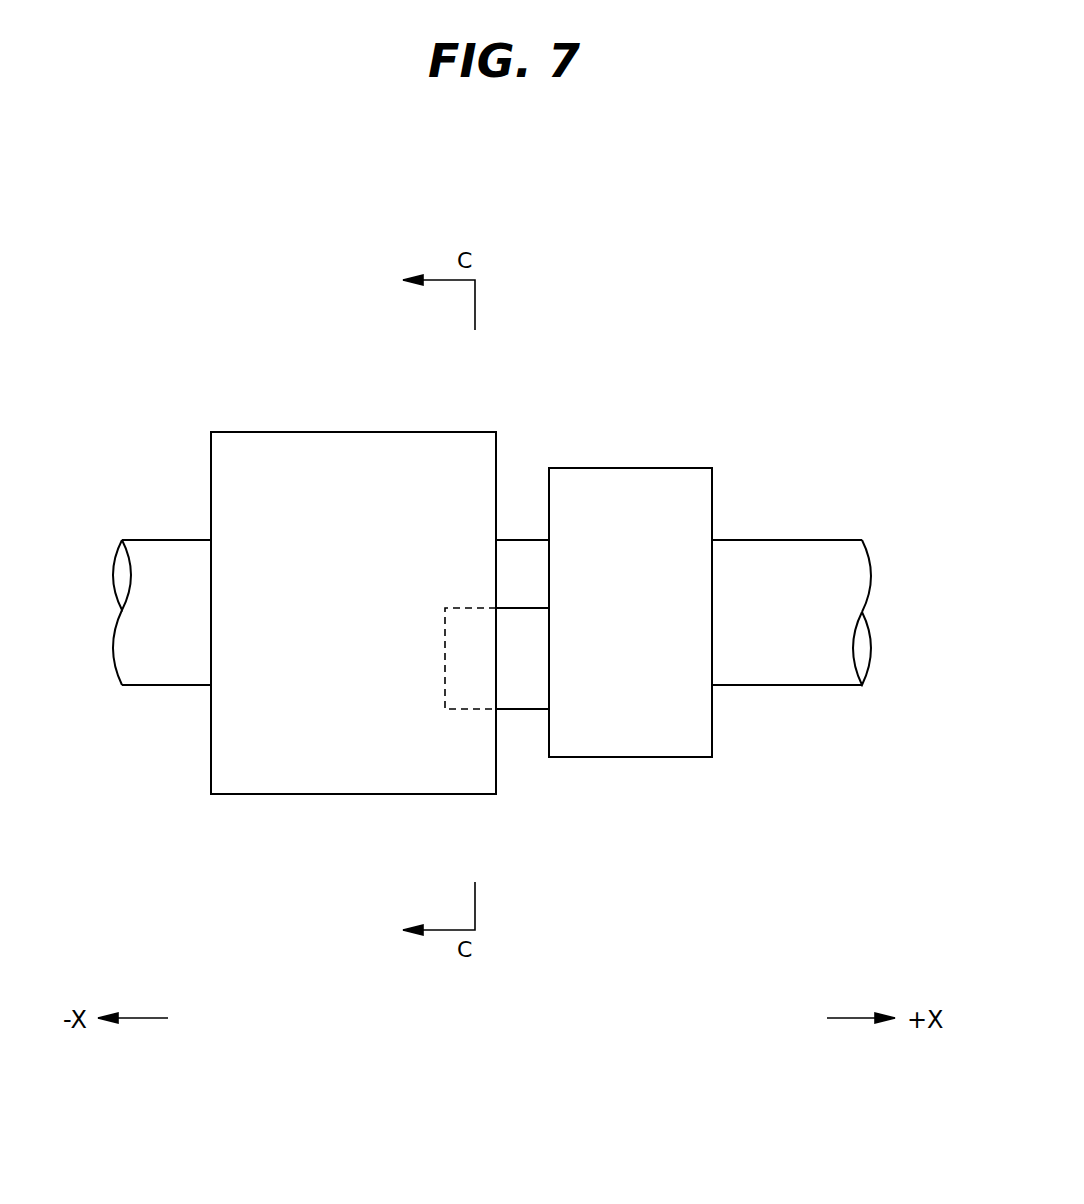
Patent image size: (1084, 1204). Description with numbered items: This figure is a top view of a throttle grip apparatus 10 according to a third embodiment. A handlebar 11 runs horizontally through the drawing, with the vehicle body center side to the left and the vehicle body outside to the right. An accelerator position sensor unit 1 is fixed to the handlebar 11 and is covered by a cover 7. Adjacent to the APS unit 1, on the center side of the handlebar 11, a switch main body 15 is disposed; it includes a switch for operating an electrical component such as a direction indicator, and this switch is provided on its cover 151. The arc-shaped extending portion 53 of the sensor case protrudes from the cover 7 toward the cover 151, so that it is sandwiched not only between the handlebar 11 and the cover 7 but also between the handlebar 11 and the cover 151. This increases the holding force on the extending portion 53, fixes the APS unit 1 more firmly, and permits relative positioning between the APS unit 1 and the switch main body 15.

The throttle grip apparatus 10 is at (878, 278).
The switch main body 15 is at (294, 428).
The cover 151 is at (375, 473).
The cover 7 is at (668, 463).
The accelerator position sensor unit 1 is at (648, 572).
The handlebar 11 is at (820, 534).
The extending portion 53 is at (518, 680).